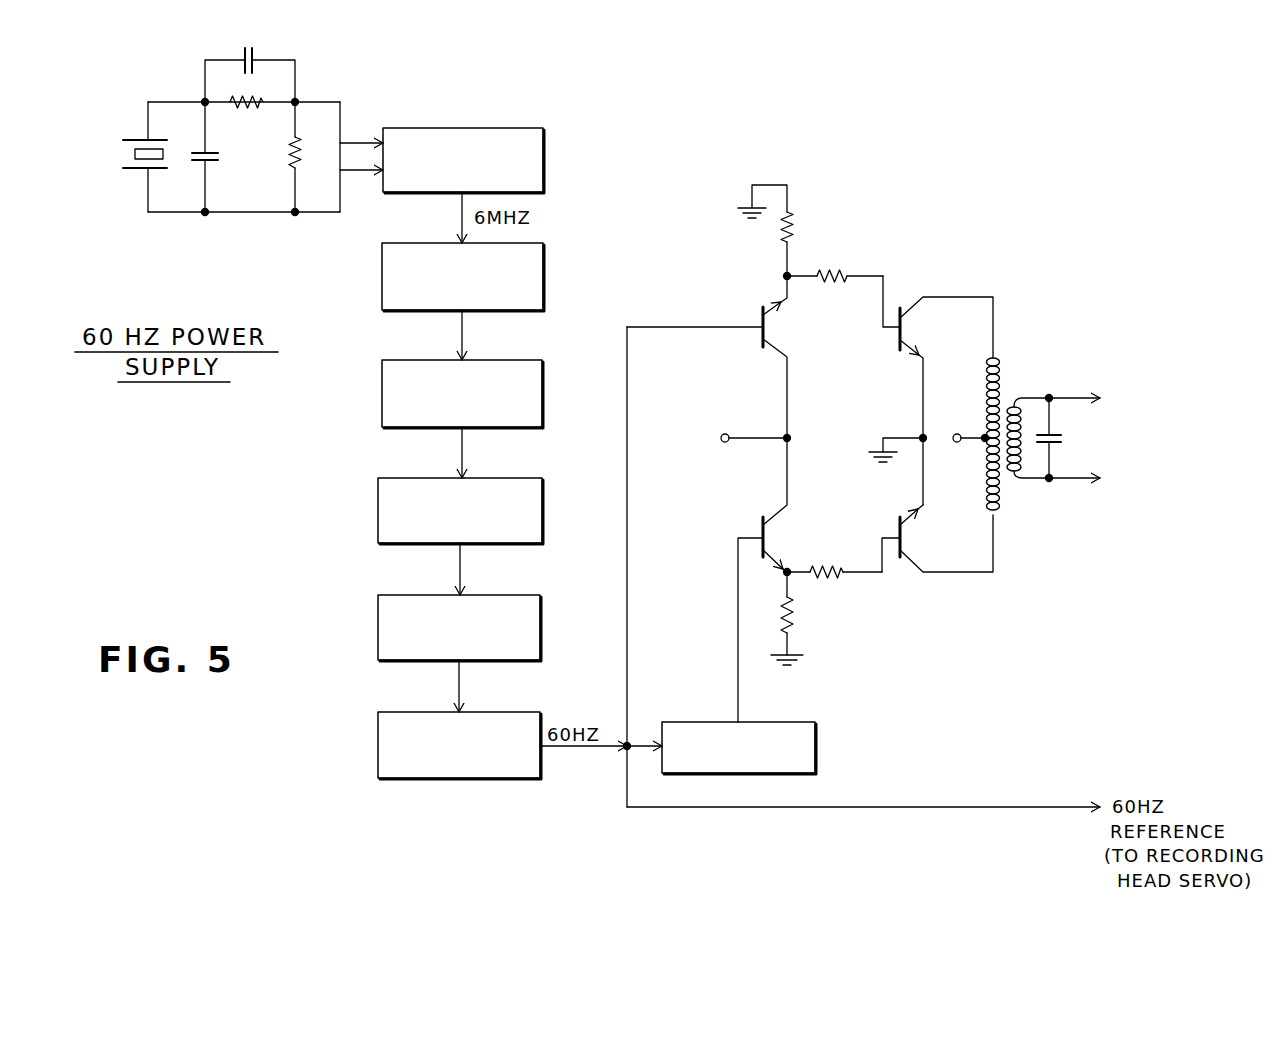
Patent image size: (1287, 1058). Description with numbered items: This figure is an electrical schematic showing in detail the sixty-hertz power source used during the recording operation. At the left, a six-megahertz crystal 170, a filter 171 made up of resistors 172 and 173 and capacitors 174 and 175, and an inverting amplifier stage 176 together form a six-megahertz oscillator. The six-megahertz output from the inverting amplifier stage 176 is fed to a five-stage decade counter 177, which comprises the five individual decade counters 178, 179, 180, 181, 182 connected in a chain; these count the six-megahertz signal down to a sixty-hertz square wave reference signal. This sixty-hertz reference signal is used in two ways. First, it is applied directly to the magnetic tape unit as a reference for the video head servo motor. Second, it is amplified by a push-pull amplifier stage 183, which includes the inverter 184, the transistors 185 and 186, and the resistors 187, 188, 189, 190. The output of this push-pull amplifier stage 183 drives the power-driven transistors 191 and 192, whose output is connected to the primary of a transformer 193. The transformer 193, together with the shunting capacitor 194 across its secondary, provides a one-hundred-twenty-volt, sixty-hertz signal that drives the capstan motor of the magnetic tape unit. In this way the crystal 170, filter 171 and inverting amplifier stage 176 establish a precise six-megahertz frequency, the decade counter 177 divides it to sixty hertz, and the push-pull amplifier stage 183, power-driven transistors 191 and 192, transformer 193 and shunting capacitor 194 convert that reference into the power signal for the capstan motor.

The 6-megahertz crystal 170 is at (125, 165).
The filter 171 is at (273, 163).
The resistor 172 is at (255, 108).
The resistor 173 is at (300, 157).
The capacitor 174 is at (220, 158).
The capacitor 175 is at (257, 45).
The inverting amplifier stage 176 is at (490, 127).
The five-stage decade counter 177 is at (341, 457).
The decade counter 178 is at (543, 270).
The decade counter 179 is at (542, 372).
The decade counter 180 is at (542, 498).
The decade counter 181 is at (540, 620).
The decade counter 182 is at (523, 712).
The push-pull amplifier stage 183 is at (710, 494).
The inverter 184 is at (772, 722).
The transistor 185 is at (768, 538).
The transistor 186 is at (768, 328).
The resistor 187 is at (793, 618).
The resistor 188 is at (797, 228).
The resistor 189 is at (833, 580).
The resistor 190 is at (833, 267).
The power-driven transistor 191 is at (905, 329).
The power-driven transistor 192 is at (905, 538).
The transformer 193 is at (1058, 381).
The shunting capacitor 194 is at (1063, 437).